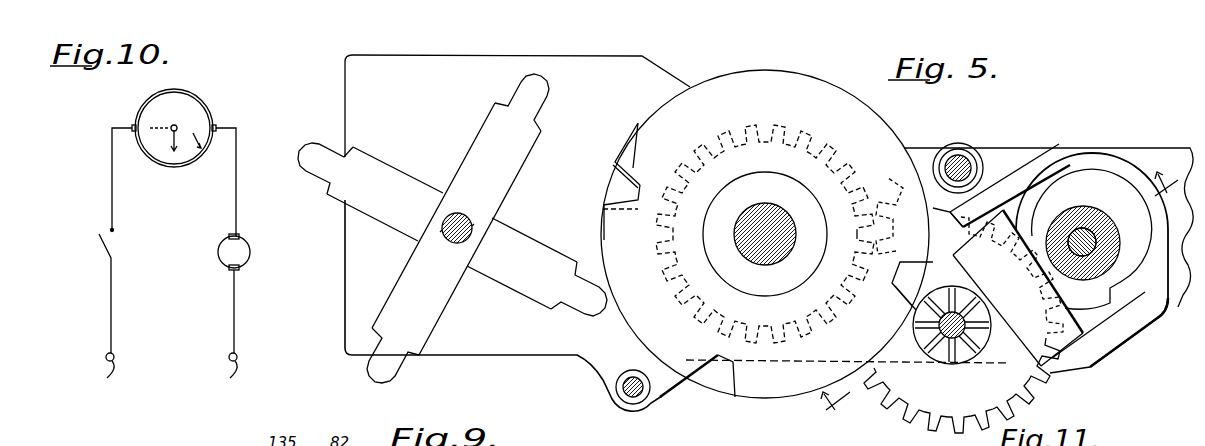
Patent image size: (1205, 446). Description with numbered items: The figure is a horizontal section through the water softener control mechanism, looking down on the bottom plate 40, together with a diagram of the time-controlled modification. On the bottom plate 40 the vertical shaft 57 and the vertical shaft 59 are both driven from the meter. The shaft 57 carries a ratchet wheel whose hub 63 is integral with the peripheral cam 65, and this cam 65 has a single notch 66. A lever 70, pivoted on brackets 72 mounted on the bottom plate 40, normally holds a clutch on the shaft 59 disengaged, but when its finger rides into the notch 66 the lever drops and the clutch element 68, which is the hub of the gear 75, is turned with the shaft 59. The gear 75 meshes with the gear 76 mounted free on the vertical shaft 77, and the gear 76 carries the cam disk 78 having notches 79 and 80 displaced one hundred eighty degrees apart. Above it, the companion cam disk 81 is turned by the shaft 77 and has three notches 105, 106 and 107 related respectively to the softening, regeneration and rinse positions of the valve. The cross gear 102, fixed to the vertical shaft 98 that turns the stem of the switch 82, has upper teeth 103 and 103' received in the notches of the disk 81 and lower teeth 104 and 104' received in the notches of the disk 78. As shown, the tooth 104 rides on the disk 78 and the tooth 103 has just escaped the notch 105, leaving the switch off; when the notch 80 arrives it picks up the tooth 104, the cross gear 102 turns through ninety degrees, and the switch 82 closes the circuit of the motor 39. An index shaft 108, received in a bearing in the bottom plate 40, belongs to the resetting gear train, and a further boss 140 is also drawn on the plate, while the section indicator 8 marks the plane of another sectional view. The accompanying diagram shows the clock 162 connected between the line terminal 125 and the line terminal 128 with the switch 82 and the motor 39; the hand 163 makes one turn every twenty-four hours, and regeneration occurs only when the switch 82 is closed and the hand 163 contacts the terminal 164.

In FIG. 10, the clock 162 is at (198, 92).
In FIG. 10, the hand 163 is at (172, 146).
In FIG. 10, the terminal 164 is at (201, 148).
In FIG. 10, the switch 82 is at (100, 250).
In FIG. 10, the motor 39 is at (250, 253).
In FIG. 10, the line terminal 125 is at (94, 376).
In FIG. 10, the line terminal 128 is at (220, 377).
In FIG. 5, the bottom plate 40 is at (655, 76).
In FIG. 5, the lower tooth 104 is at (467, 251).
In FIG. 5, the lower tooth 104' is at (346, 156).
In FIG. 5, the cross gear 102 is at (483, 209).
In FIG. 5, the upper tooth 103 is at (542, 98).
In FIG. 5, the upper tooth 103' is at (412, 361).
In FIG. 5, the vertical shaft 98 is at (465, 214).
In FIG. 5, the cam disk 81 is at (765, 80).
In FIG. 5, the gear 76 is at (802, 133).
In FIG. 5, the vertical shaft 77 is at (762, 204).
In FIG. 5, the notch 105 is at (634, 140).
In FIG. 5, the notch 79 is at (618, 180).
In FIG. 5, the boss 140 is at (622, 403).
In FIG. 5, the cam disk 78 is at (712, 380).
In FIG. 5, the notch 106 is at (734, 378).
In FIG. 5, the section line 8- 8 is at (998, 296).
In FIG. 5, the notch 107 is at (907, 237).
In FIG. 5, the notch 80 is at (902, 281).
In FIG. 5, the vertical shaft 59 is at (930, 338).
In FIG. 5, the clutch element 68 is at (952, 357).
In FIG. 5, the gear 75 is at (938, 427).
In FIG. 5, the lever 70 is at (1025, 363).
In FIG. 5, the index shaft 108 is at (962, 155).
In FIG. 5, the peripheral cam 65 is at (1080, 183).
In FIG. 5, the hub 63 is at (1062, 213).
In FIG. 5, the vertical shaft 57 is at (1096, 242).
In FIG. 5, the notch 66 is at (1112, 290).
In FIG. 5, the brackets 72 is at (1107, 338).